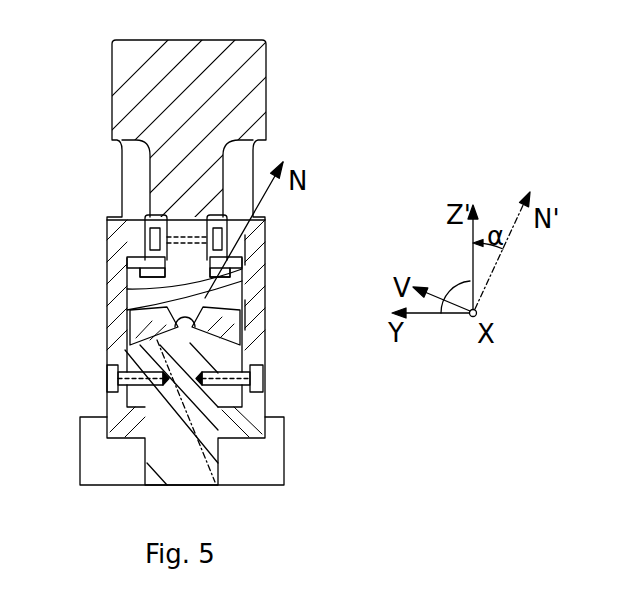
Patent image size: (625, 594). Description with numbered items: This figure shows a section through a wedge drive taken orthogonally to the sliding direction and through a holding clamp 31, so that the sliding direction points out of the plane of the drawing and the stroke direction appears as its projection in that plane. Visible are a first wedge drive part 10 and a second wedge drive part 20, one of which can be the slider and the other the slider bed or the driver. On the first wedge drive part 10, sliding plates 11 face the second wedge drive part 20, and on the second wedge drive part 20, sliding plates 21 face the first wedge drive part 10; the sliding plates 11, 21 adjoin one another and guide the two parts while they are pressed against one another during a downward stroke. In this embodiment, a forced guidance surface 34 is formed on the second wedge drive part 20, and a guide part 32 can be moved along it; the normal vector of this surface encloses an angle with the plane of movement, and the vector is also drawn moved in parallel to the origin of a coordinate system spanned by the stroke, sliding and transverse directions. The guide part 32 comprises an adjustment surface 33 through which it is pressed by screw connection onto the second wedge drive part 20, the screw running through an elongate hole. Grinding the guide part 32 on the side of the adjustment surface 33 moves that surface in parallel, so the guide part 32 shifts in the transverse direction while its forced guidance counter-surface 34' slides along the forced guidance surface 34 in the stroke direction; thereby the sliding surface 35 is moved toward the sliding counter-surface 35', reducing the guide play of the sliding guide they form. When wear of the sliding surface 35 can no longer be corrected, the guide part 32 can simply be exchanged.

The first wedge drive part 10 is at (212, 484).
The second wedge drive part 20 is at (268, 113).
The adjustment surface 33 is at (198, 220).
The sliding surface 35 is at (106, 237).
The forced guidance surface 34 is at (106, 251).
The sliding counter-surface 35' is at (145, 270).
The forced guidance counter-surface 34' is at (139, 291).
The holding clamp 31 is at (263, 245).
The guide part 32 is at (247, 280).
The sliding plates 21 is at (148, 330).
The sliding plates 11 is at (150, 346).